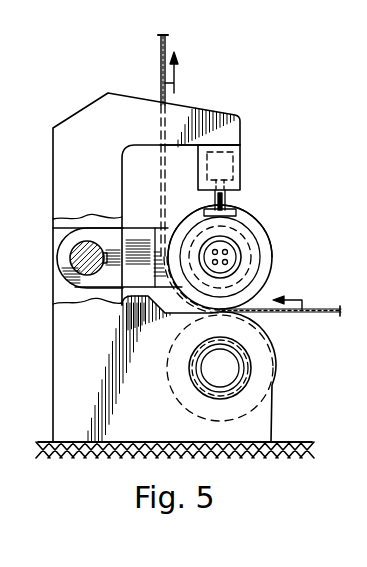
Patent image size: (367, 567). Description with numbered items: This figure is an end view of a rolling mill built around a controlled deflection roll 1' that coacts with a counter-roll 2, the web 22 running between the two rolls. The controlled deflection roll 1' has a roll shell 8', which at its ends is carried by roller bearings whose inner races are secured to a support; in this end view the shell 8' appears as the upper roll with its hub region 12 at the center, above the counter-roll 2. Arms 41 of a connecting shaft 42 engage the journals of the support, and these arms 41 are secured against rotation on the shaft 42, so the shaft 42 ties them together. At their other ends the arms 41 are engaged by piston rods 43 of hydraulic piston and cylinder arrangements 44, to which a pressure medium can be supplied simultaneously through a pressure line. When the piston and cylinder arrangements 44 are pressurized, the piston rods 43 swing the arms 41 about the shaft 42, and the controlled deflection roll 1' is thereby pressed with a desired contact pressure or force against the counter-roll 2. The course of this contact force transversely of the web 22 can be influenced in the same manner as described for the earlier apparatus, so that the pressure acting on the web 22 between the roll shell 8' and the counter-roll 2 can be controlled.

The controlled deflection roll 1' is at (248, 219).
The counter-roll 2 is at (273, 358).
The roll shell 8' is at (237, 257).
The roller hub 12 is at (224, 265).
The web 22 is at (160, 68).
The arm 41 is at (62, 268).
The connecting shaft 42 is at (70, 254).
The piston rod 43 is at (226, 197).
The hydraulic piston and cylinder arrangement 44 is at (238, 152).